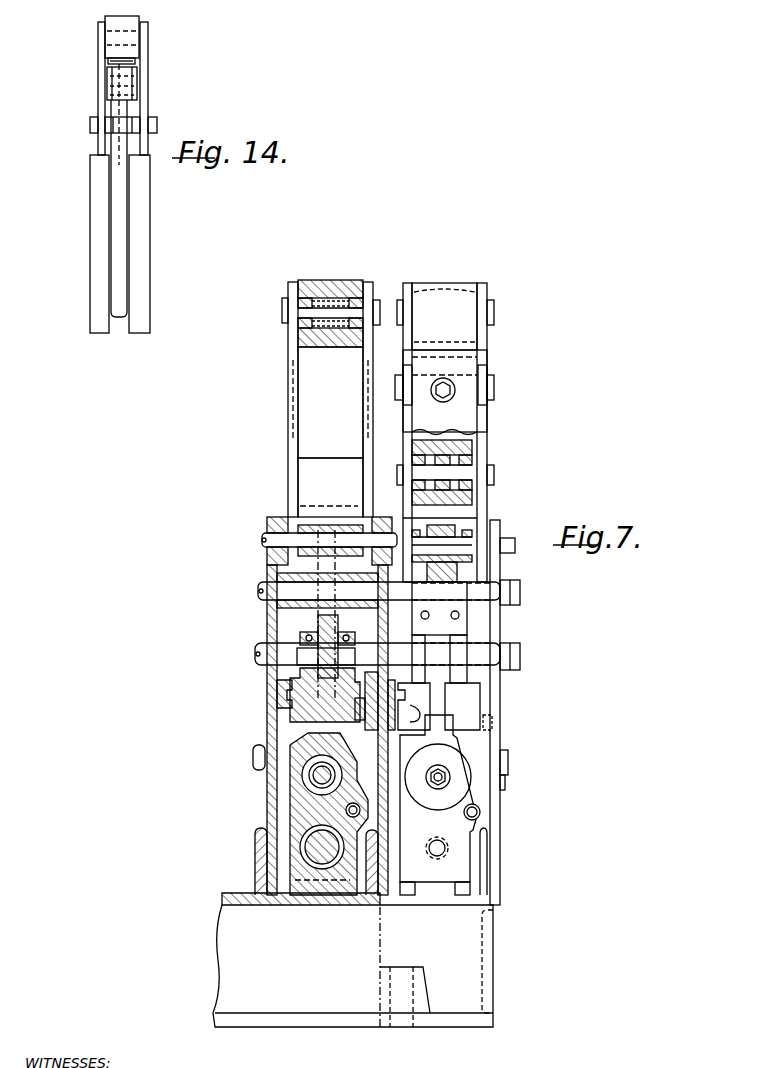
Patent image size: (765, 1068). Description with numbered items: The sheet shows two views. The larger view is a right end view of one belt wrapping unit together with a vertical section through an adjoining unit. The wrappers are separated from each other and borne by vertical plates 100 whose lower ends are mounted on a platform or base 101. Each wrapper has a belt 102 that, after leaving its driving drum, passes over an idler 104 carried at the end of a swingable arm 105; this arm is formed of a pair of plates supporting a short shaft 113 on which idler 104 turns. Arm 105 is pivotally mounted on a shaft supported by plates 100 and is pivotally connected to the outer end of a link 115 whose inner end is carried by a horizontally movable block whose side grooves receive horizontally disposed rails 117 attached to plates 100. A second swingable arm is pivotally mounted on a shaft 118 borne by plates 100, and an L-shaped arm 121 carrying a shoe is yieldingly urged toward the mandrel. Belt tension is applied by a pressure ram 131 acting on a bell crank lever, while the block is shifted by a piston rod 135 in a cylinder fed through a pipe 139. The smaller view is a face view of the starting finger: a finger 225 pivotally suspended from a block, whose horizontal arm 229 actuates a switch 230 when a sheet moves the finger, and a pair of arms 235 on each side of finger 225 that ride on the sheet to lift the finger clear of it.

In FIG. 14, the switch 230 is at (108, 61).
In FIG. 14, the horizontal arm 229 is at (112, 71).
In FIG. 14, the finger 225 is at (120, 268).
In FIG. 14, the arms 235 is at (97, 305).
In FIG. 7, the idler 104 is at (338, 290).
In FIG. 7, the short shaft 113 is at (300, 335).
In FIG. 7, the swingable arm 105 is at (283, 462).
In FIG. 7, the belt 102 is at (305, 505).
In FIG. 7, the shaft 118 is at (264, 540).
In FIG. 7, the L-shaped arm 121 is at (462, 423).
In FIG. 7, the link 115 is at (320, 620).
In FIG. 7, the rails 117 is at (277, 705).
In FIG. 7, the piston rod 135 is at (318, 768).
In FIG. 7, the vertical plates 100 is at (267, 793).
In FIG. 7, the pressure ram 131 is at (322, 847).
In FIG. 7, the pipe 139 is at (480, 812).
In FIG. 7, the base 101 is at (230, 913).